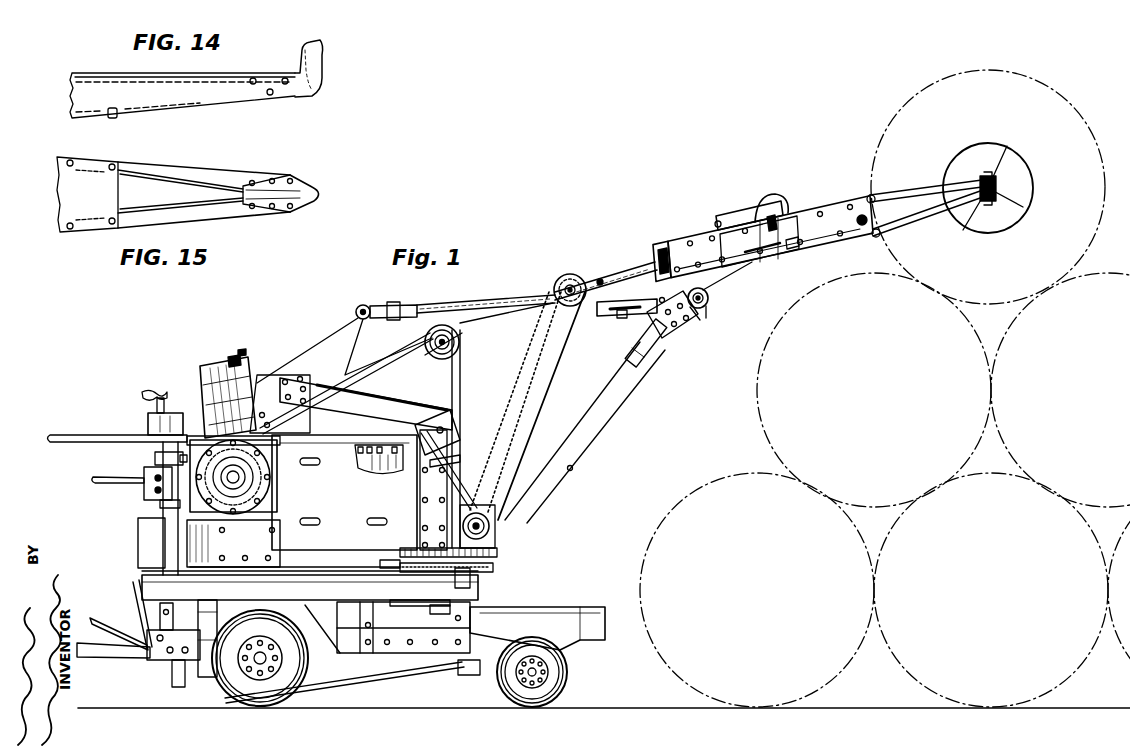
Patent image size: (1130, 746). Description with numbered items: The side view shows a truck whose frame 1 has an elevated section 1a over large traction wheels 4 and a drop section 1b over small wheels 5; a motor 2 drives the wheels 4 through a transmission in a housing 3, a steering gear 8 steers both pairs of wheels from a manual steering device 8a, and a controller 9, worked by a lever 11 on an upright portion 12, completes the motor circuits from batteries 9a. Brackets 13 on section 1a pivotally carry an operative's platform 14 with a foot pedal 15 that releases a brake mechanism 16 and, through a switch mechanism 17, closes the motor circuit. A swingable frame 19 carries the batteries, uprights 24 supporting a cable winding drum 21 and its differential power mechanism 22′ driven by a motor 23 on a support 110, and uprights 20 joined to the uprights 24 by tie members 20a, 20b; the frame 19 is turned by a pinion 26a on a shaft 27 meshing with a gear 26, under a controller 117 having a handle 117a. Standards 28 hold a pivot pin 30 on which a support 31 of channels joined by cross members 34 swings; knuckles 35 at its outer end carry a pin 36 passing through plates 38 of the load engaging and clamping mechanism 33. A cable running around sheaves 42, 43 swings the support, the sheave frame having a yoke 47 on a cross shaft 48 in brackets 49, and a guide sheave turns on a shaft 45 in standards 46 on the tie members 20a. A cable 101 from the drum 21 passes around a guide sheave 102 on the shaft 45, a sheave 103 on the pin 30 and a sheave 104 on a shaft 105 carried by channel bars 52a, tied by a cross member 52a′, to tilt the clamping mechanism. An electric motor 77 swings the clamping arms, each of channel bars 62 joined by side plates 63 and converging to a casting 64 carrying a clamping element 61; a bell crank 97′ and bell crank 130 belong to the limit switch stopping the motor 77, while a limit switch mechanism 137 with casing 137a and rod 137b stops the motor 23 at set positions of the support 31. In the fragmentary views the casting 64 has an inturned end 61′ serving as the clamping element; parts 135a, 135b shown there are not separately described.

In FIG. 1, the frame 1 is at (315, 575).
In FIG. 1, the elevated section 1a is at (325, 571).
In FIG. 1, the drop section 1b is at (528, 620).
In FIG. 1, the motor 2 is at (205, 612).
In FIG. 1, the housing 3 is at (456, 578).
In FIG. 1, the wheels 4 is at (222, 690).
In FIG. 1, the wheels 5 is at (500, 694).
In FIG. 1, the steering gear 8 is at (372, 685).
In FIG. 1, the manual steering device 8a is at (86, 434).
In FIG. 1, the controller 9 is at (143, 491).
In FIG. 1, the batteries 9a is at (365, 468).
In FIG. 1, the operating lever 11 is at (100, 481).
In FIG. 1, the upright portion 12 is at (160, 504).
In FIG. 1, the brackets 13 is at (150, 610).
In FIG. 1, the platform 14 is at (92, 655).
In FIG. 1, the foot pedal 15 is at (493, 569).
In FIG. 1, the brake mechanism 16 is at (785, 204).
In FIG. 1, the switch mechanism 17 is at (138, 546).
In FIG. 1, the frame 19 is at (362, 566).
In FIG. 1, the uprights 20 is at (414, 478).
In FIG. 1, the tie member 20a is at (378, 398).
In FIG. 1, the tie member 20b is at (292, 345).
In FIG. 1, the cable winding drum 21 is at (276, 470).
In FIG. 1, the power mechanism 22′ is at (276, 492).
In FIG. 1, the motor 23 is at (208, 372).
In FIG. 1, the uprights 24 is at (278, 447).
In FIG. 1, the gear 26 is at (430, 600).
In FIG. 1, the pinion 26a is at (396, 560).
In FIG. 1, the shaft 27 is at (392, 582).
In FIG. 1, the standards 28 is at (497, 553).
In FIG. 1, the pivot pin 30 is at (490, 532).
In FIG. 1, the support 31 is at (596, 436).
In FIG. 1, the load engaging and clamping mechanism 33 is at (768, 228).
In FIG. 1, the cross members 34 is at (664, 360).
In FIG. 1, the knuckles 35 is at (700, 322).
In FIG. 1, the pivot pin 36 is at (709, 306).
In FIG. 1, the plates 38 is at (728, 278).
In FIG. 1, the sheave 42 is at (372, 314).
In FIG. 1, the sheave 43 is at (614, 312).
In FIG. 1, the shaft 45 is at (459, 338).
In FIG. 1, the standards 46 is at (458, 372).
In FIG. 1, the yokes 47 is at (648, 262).
In FIG. 1, the cross shaft 48 is at (674, 330).
In FIG. 1, the brackets 49 is at (715, 224).
In FIG. 1, the channel bars 52a is at (622, 278).
In FIG. 1, the cross member 52a′ is at (598, 277).
In FIG. 1, the load clamping elements 61 is at (995, 146).
In FIG. 14, the inturned end 61′ is at (312, 42).
In FIG. 15, the inturned end 61′ is at (308, 186).
In FIG. 14, the channel bars 62 is at (176, 104).
In FIG. 15, the channel bars 62 is at (176, 170).
In FIG. 1, the channel bars 62 is at (912, 196).
In FIG. 15, the side plates 63 is at (66, 188).
In FIG. 15, the casting 64 is at (274, 197).
In FIG. 1, the casting 64 is at (978, 180).
In FIG. 1, the electric motor 77 is at (765, 200).
In FIG. 1, the connecting member 97′ is at (796, 255).
In FIG. 1, the flexible member 101 is at (318, 400).
In FIG. 1, the guide sheave 102 is at (457, 349).
In FIG. 1, the sheave 103 is at (508, 512).
In FIG. 1, the sheave 104 is at (564, 274).
In FIG. 1, the shaft 105 is at (556, 284).
In FIG. 1, the support 110 is at (262, 396).
In FIG. 1, the controller 117 is at (148, 418).
In FIG. 1, the handle 117a is at (150, 394).
In FIG. 1, the bell crank 130 is at (770, 255).
In FIG. 1, the bolt 135a is at (884, 234).
In FIG. 1, the bolt 135b is at (878, 199).
In FIG. 1, the limit switch mechanism 137 is at (452, 480).
In FIG. 1, the casing 137a is at (456, 436).
In FIG. 1, the rod 137b is at (456, 468).